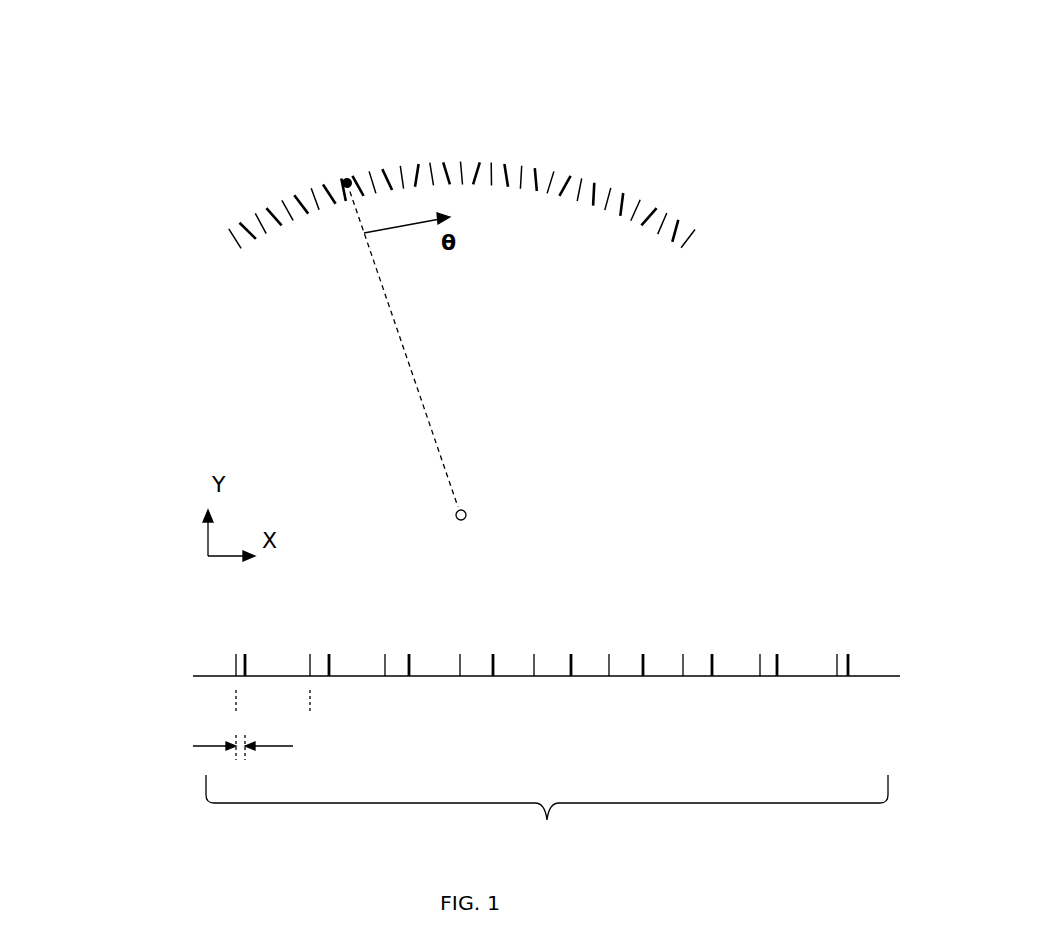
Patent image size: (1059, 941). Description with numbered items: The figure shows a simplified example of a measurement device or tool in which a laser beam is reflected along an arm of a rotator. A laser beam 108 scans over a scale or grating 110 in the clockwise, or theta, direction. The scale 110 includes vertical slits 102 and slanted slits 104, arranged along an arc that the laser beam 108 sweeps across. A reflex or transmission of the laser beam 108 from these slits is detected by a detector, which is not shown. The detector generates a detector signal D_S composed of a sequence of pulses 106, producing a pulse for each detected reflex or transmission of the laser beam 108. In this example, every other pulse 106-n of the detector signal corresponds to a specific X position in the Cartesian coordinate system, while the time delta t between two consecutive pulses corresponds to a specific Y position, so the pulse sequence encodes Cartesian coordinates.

The vertical slits 102 is at (297, 193).
The slanted slits 104 is at (398, 170).
The sequence of pulses 106 is at (461, 756).
The pulse 106-n is at (298, 653).
The laser beam 108 is at (409, 360).
The scale or grating 110 is at (612, 88).